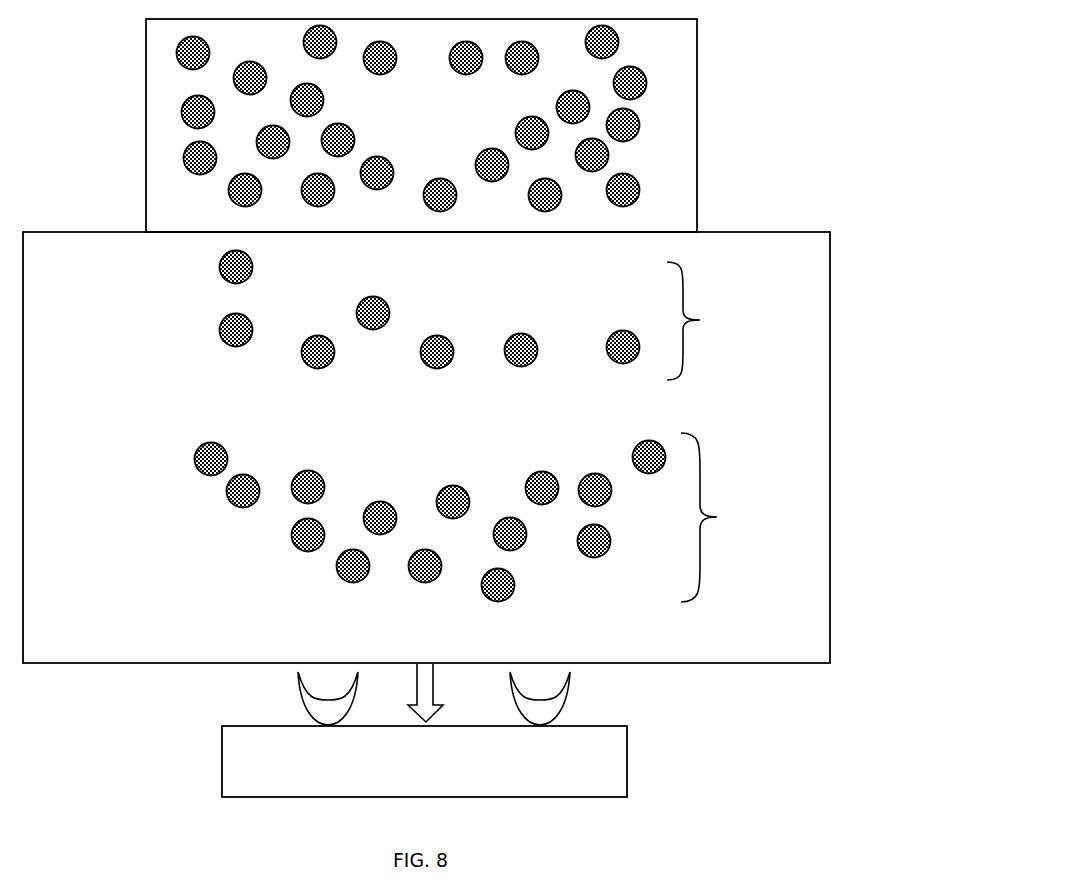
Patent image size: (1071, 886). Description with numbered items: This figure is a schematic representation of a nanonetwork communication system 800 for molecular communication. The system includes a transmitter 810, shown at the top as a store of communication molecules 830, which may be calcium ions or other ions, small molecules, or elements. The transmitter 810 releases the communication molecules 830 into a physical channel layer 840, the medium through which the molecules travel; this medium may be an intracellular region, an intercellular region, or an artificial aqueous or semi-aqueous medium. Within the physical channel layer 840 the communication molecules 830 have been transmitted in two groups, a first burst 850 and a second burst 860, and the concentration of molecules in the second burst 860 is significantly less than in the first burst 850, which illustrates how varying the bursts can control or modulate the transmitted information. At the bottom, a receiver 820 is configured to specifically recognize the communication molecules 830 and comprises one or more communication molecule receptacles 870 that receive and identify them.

The nanonetwork communication system 800 is at (762, 50).
The transmitter 810 is at (438, 138).
The receiver 820 is at (443, 781).
The communication molecule 830 is at (185, 433).
The physical channel layer 840 is at (188, 640).
The first burst 850 is at (758, 533).
The second burst 860 is at (745, 333).
The communication molecule receptacles 870 is at (580, 696).